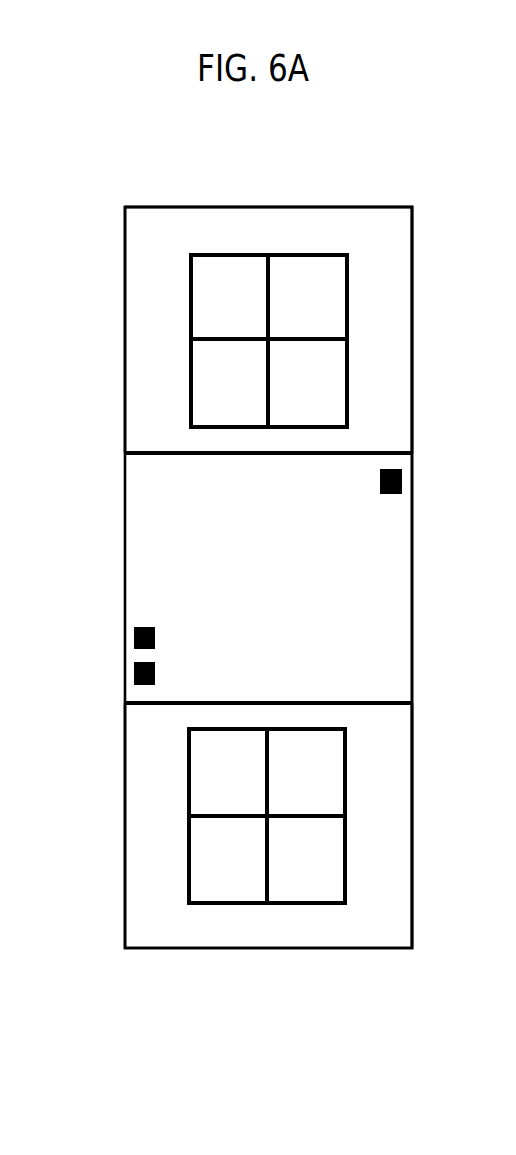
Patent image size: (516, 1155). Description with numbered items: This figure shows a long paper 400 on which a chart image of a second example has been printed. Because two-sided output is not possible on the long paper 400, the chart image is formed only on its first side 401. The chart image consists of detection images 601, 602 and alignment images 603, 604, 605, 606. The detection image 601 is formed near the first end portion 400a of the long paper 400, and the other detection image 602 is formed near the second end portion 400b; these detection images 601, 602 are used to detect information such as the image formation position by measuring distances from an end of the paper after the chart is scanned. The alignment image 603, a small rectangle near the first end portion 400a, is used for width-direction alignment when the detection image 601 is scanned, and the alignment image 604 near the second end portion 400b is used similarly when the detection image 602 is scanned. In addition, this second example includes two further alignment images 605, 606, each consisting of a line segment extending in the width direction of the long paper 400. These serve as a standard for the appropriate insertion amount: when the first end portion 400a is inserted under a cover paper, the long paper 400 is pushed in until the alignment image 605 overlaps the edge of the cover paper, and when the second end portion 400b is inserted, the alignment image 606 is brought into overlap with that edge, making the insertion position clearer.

The long paper 400 is at (252, 180).
The first end portion 400a is at (143, 215).
The second end portion 400b is at (145, 942).
The first side 401 is at (372, 223).
The detection image 601 is at (279, 233).
The detection image 602 is at (236, 924).
The alignment image 603 is at (390, 504).
The alignment image 604 is at (143, 605).
The alignment image 605 is at (361, 450).
The alignment image 606 is at (166, 707).